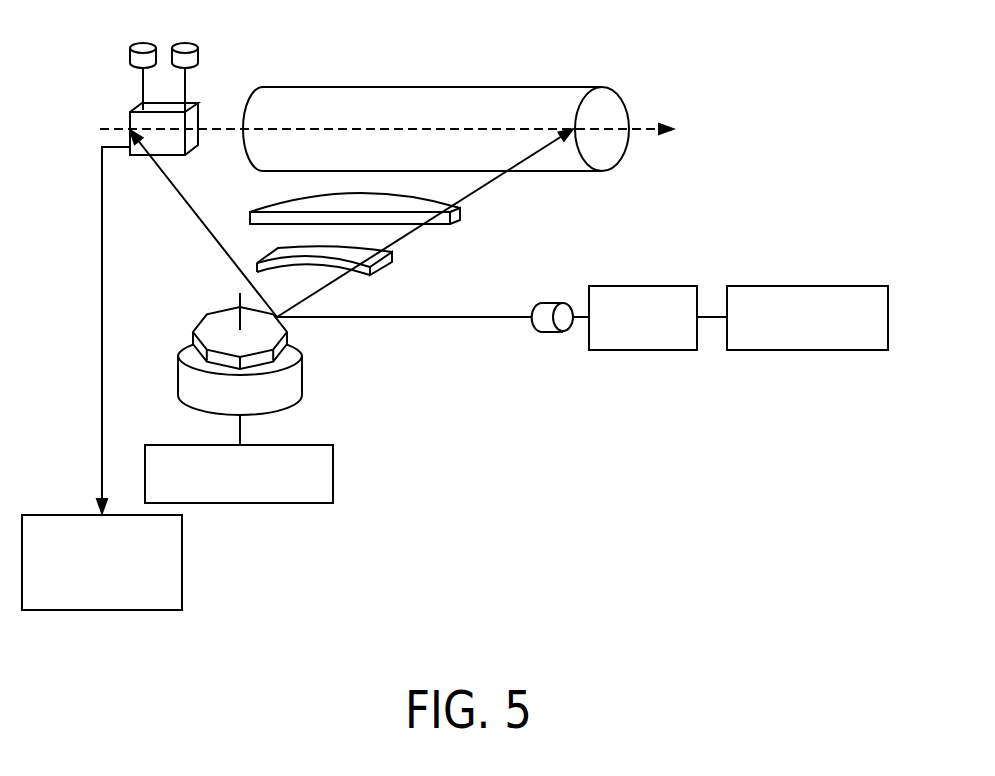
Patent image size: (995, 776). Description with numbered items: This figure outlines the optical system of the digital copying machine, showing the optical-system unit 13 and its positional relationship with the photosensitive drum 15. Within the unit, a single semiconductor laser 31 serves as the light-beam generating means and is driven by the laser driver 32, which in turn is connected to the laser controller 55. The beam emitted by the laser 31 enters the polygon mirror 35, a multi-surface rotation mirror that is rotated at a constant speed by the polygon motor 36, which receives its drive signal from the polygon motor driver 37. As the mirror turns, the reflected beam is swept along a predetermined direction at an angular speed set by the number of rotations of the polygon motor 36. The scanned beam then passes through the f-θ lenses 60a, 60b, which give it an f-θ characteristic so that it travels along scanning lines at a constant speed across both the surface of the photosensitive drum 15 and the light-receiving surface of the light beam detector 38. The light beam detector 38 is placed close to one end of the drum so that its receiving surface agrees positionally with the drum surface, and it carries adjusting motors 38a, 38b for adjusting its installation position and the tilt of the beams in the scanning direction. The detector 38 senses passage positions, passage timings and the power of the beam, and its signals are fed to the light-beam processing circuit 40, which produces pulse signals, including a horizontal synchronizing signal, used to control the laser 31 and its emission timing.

The optical-system unit 13 is at (612, 498).
The photosensitive drum 15 is at (431, 87).
The laser 31 is at (550, 303).
The laser driver 32 is at (668, 286).
The polygon mirror 35 is at (215, 320).
The polygon motor 36 is at (302, 368).
The polygon motor driver 37 is at (334, 474).
The light beam detector 38 is at (135, 106).
The adjusting motor 38a is at (129, 50).
The adjusting motor 38b is at (199, 50).
The light-beam processing circuit 40 is at (172, 562).
The laser controller 55 is at (812, 286).
The f-θ lens 60a is at (460, 215).
The f-θ lens 60b is at (392, 258).